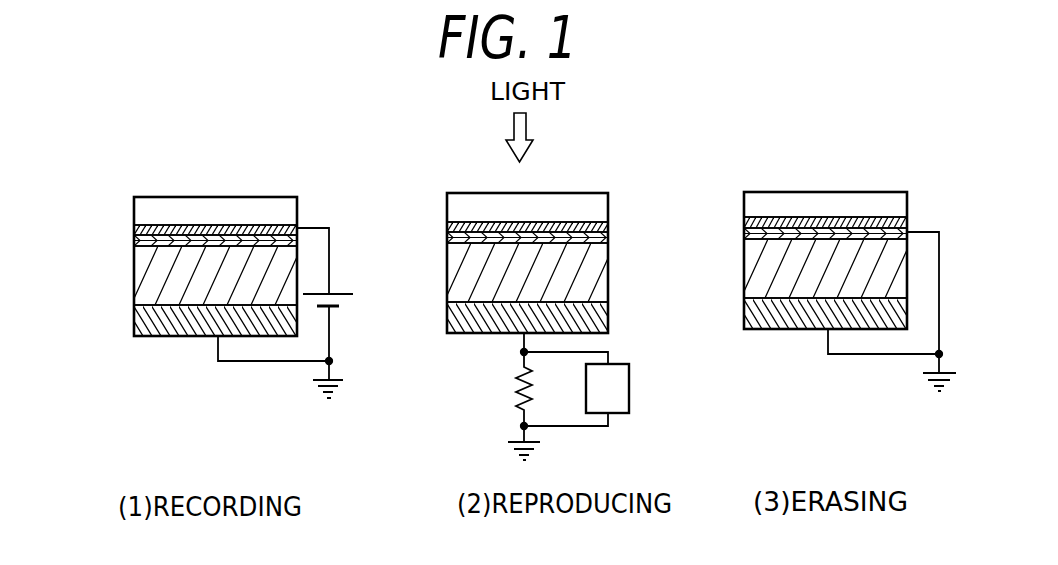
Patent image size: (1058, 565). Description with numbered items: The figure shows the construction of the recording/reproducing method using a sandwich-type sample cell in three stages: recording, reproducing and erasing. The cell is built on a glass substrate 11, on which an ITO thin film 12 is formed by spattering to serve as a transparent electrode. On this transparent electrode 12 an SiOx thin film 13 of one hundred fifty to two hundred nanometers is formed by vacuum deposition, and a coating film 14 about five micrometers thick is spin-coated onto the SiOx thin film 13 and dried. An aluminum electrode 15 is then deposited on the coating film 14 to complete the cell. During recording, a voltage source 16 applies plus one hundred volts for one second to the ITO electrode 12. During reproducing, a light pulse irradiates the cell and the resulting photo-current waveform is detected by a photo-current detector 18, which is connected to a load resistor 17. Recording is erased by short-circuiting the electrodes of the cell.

The glass substrate 11 is at (142, 211).
The ITO thin film 12 is at (142, 232).
The SiOx thin film 13 is at (142, 240).
The coating film 14 is at (142, 277).
The aluminum electrode 15 is at (142, 322).
The voltage source 16 is at (343, 285).
The load resistor 17 is at (508, 395).
The photo-current detector 18 is at (630, 380).